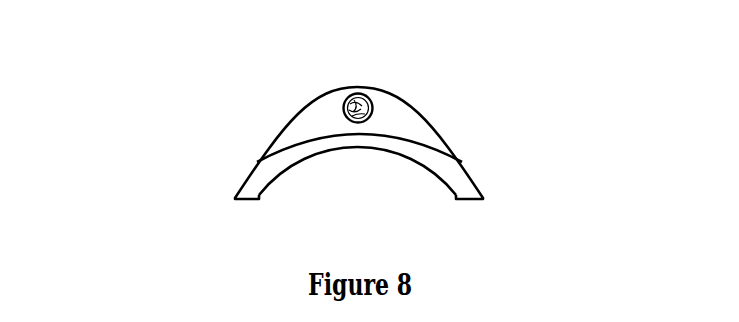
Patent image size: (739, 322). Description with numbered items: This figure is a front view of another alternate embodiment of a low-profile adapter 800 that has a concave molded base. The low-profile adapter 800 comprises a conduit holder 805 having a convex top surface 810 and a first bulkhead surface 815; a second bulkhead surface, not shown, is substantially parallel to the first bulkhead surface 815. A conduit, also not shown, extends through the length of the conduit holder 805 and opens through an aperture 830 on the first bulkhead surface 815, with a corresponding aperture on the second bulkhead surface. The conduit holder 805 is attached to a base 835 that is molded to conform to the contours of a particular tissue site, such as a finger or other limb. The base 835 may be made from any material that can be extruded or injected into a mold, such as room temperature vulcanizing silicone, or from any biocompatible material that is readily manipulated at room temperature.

The low-profile adapter 800 is at (183, 78).
The conduit holder 805 is at (302, 95).
The convex top surface 810 is at (405, 103).
The first bulkhead surface 815 is at (405, 128).
The aperture 830 is at (365, 100).
The base 835 is at (463, 183).